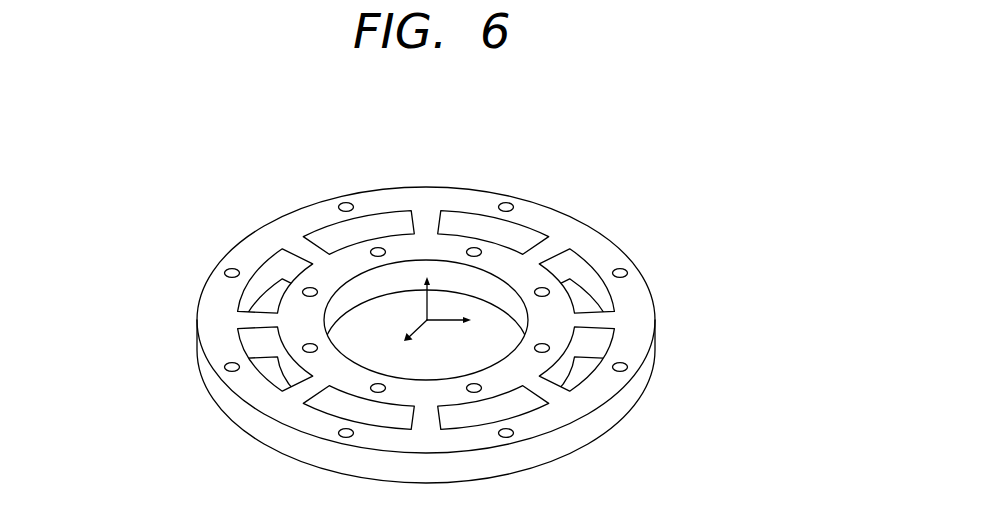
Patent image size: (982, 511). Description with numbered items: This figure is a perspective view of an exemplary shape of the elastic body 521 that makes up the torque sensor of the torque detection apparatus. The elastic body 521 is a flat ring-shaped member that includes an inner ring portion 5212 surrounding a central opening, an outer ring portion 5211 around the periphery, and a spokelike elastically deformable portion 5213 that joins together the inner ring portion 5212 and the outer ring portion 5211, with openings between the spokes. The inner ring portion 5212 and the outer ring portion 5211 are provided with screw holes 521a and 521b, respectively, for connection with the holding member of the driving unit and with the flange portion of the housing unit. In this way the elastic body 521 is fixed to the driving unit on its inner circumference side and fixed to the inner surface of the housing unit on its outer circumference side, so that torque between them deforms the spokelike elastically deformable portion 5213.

The elastic body 521 is at (199, 162).
The outer ring portion 5211 is at (540, 217).
The inner ring portion 5212 is at (347, 260).
The spokelike elastically deformable portion 5213 is at (428, 215).
The screw hole 521a is at (225, 363).
The screw hole 521b is at (515, 430).